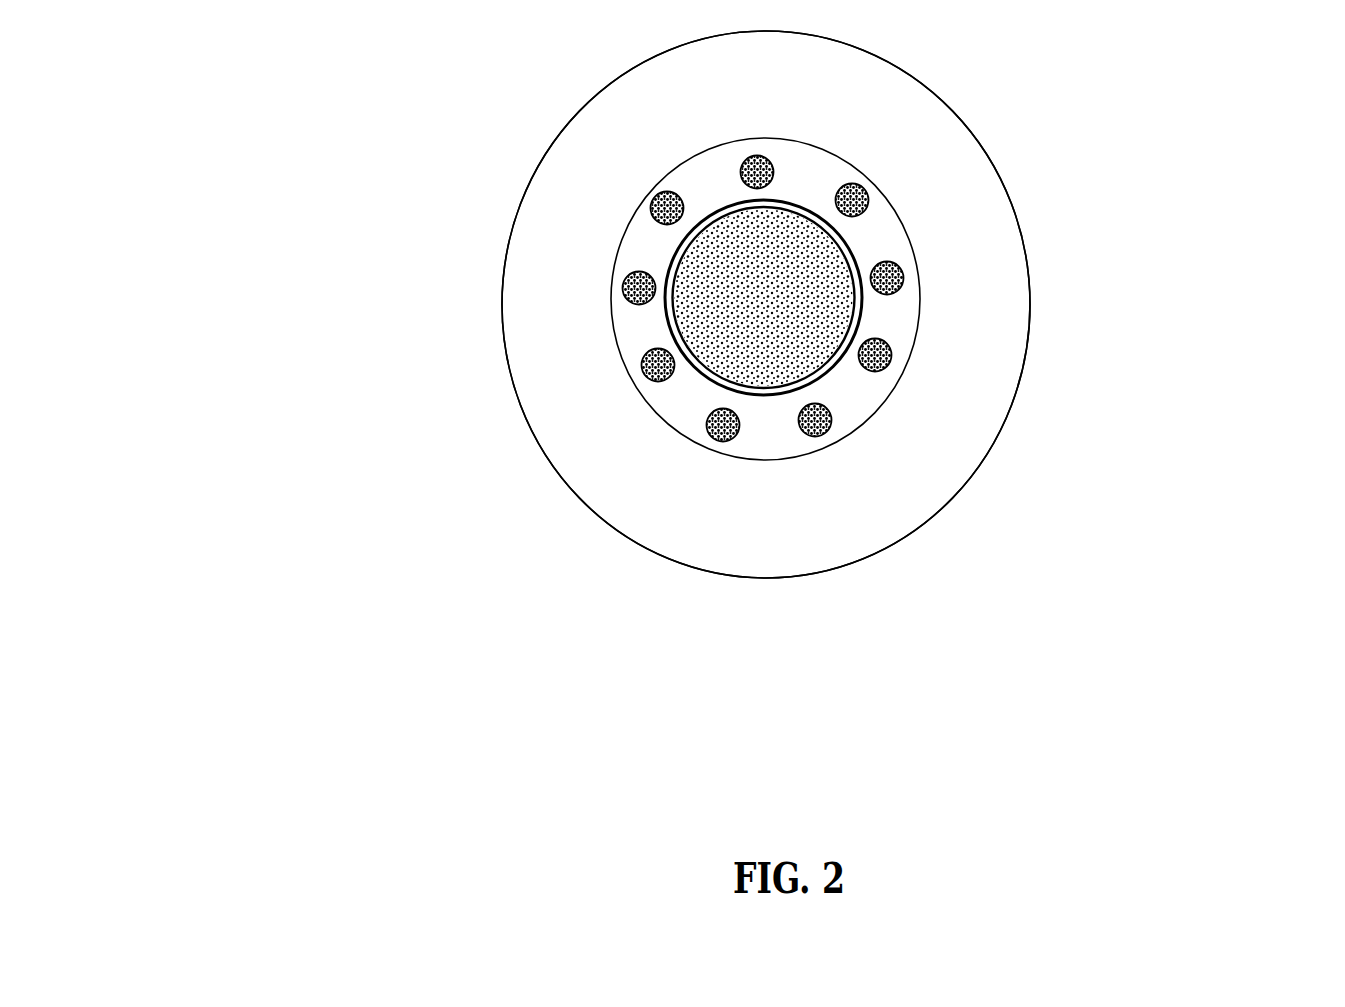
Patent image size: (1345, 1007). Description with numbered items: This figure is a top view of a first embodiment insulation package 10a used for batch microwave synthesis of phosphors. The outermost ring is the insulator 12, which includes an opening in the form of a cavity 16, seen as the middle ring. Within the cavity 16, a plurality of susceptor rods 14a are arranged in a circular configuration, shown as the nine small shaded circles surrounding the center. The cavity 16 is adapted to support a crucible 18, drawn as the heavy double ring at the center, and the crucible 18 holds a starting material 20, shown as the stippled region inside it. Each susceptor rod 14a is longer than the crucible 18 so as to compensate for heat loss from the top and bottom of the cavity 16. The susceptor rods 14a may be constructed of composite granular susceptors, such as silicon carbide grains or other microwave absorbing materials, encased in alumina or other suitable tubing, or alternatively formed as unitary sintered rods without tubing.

The first embodiment insulation package 10a is at (310, 365).
The insulator 12 is at (608, 522).
The susceptor rods 14a is at (728, 161).
The cavity 16 is at (858, 402).
The crucible 18 is at (668, 249).
The starting material 20 is at (822, 305).